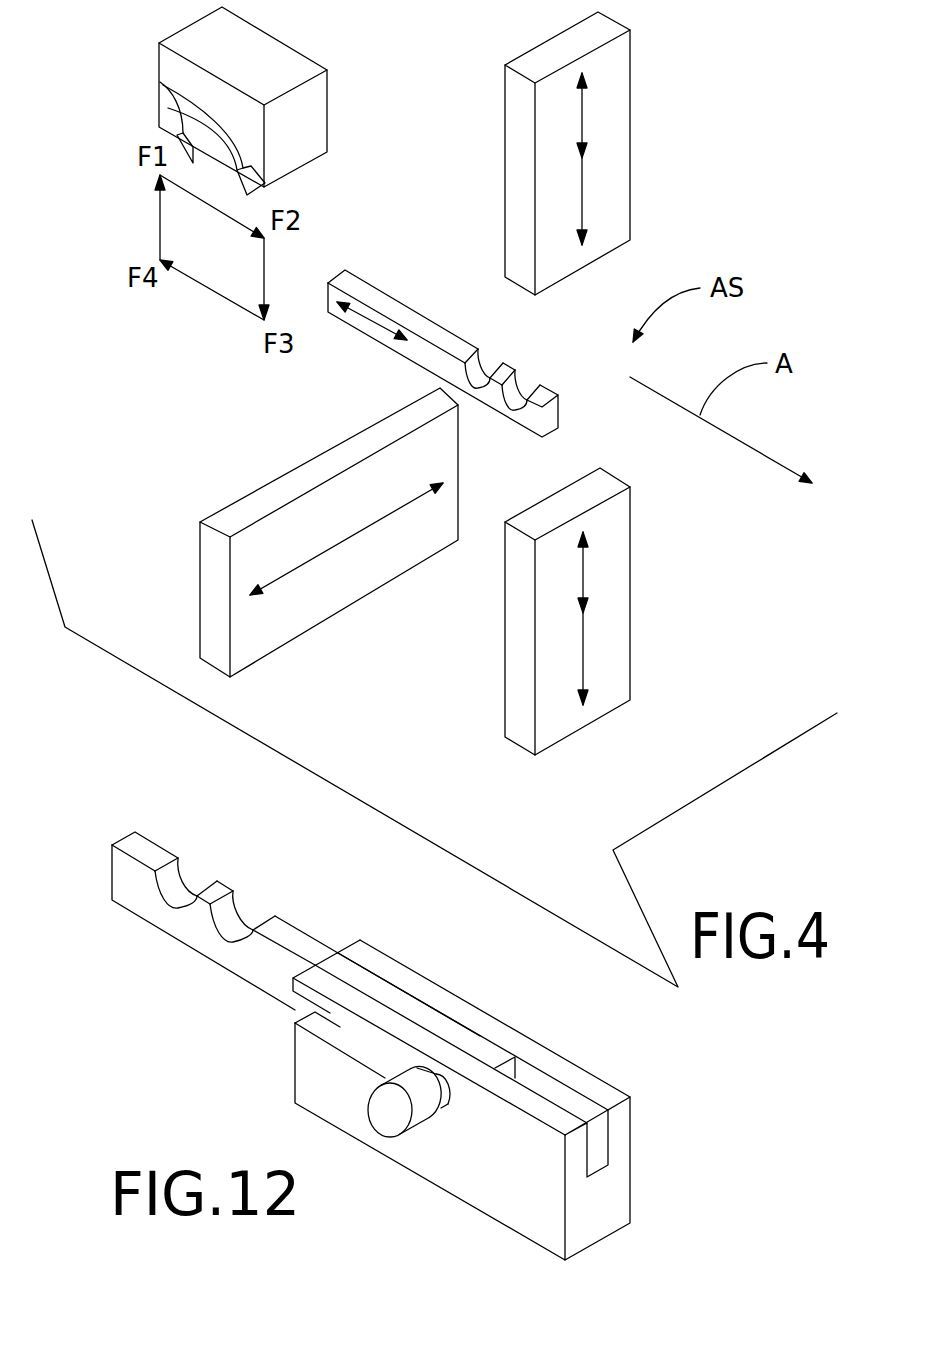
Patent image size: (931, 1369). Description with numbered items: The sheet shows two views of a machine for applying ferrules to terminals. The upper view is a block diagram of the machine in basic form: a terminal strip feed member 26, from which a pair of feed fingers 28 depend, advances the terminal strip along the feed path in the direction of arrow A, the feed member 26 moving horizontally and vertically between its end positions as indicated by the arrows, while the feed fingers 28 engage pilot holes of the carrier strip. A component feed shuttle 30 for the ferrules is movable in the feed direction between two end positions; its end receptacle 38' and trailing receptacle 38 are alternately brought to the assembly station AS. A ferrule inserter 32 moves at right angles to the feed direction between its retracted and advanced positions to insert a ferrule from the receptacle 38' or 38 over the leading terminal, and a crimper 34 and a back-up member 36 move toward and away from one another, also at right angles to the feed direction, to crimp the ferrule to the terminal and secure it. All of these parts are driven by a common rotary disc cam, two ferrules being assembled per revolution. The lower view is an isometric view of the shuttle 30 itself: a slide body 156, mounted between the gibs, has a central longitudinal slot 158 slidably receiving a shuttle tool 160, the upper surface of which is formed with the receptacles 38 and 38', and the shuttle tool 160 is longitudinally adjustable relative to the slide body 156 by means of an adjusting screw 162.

In FIG. 4, the terminal strip feed member 26 is at (305, 53).
In FIG. 4, the feed fingers 28 is at (161, 83).
In FIG. 4, the component feed shuttle 30 is at (462, 335).
In FIG. 12, the component feed shuttle 30 is at (379, 931).
In FIG. 4, the ferrule inserter 32 is at (367, 587).
In FIG. 4, the crimper 34 is at (623, 647).
In FIG. 4, the back-up member 36 is at (630, 107).
In FIG. 4, the trailing receptacle 38 is at (500, 345).
In FIG. 12, the trailing receptacle 38 is at (265, 893).
In FIG. 4, the end receptacle 38' is at (558, 371).
In FIG. 12, the end receptacle 38' is at (193, 846).
In FIG. 12, the slide body 156 is at (457, 1005).
In FIG. 12, the central longitudinal slot 158 is at (563, 1093).
In FIG. 12, the shuttle tool 160 is at (368, 990).
In FIG. 12, the adjusting screw 162 is at (388, 1123).